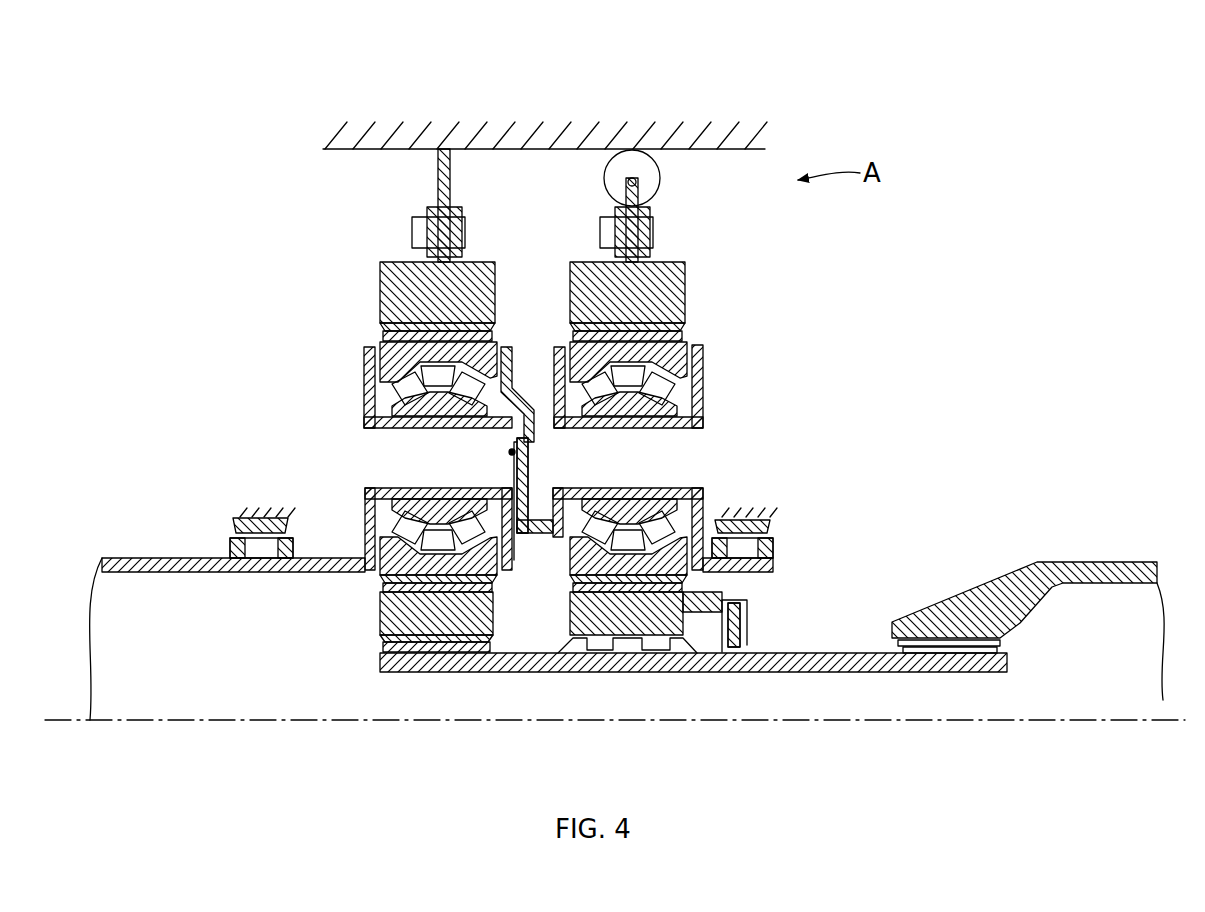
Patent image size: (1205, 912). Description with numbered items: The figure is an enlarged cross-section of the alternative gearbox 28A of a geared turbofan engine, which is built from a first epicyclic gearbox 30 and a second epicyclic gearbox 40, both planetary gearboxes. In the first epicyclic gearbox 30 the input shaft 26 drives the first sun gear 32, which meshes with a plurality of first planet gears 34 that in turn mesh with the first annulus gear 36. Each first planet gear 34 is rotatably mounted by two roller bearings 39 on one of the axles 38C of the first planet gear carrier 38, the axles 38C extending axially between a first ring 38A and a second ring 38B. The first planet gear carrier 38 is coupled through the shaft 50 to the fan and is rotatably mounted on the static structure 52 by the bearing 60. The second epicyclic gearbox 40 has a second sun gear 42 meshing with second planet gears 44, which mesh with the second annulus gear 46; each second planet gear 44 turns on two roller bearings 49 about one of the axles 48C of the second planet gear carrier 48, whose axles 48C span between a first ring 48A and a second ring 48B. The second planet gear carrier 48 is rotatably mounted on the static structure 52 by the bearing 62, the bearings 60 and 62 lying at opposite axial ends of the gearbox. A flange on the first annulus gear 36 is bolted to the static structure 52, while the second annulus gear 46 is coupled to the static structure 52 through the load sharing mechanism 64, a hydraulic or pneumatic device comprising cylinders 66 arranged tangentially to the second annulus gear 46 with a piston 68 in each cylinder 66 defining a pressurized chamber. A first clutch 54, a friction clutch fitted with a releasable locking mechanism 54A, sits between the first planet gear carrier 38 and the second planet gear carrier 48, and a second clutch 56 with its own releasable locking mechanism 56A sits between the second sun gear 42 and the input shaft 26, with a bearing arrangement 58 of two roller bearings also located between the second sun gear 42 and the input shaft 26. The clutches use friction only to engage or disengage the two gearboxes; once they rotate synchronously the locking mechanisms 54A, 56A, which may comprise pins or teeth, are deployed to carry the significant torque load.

The input shaft 26 is at (1115, 570).
The alternative gearbox 28A is at (880, 207).
The first epicyclic gearbox 30 is at (411, 245).
The first sun gear 32 is at (380, 625).
The first planet gear 34 is at (372, 363).
The first annulus gear 36 is at (465, 295).
The first planet gear carrier 38 is at (393, 372).
The first ring 38A is at (385, 380).
The second ring 38B is at (507, 345).
The axles 38C is at (398, 428).
The planet gear bearing 39 is at (468, 372).
The second epicyclic gearbox 40 is at (665, 341).
The second sun gear 42 is at (672, 660).
The second planet gear 44 is at (697, 341).
The second annulus gear 46 is at (612, 287).
The second planet gear carrier 48 is at (671, 411).
The first ring 48A is at (573, 400).
The second ring 48B is at (697, 392).
The axles 48C is at (680, 430).
The planet gear bearing 49 is at (660, 405).
The shaft 50 is at (185, 557).
The static structure 52 is at (712, 110).
The first clutch 54 is at (512, 452).
The releasable locking mechanism 54A is at (522, 485).
The second clutch 56 is at (750, 587).
The releasable locking mechanism 56A is at (734, 625).
The bearing arrangement 58 is at (652, 640).
The bearing 60 is at (300, 541).
The bearing 62 is at (772, 546).
The load sharing mechanism 64 is at (648, 173).
The cylinder 66 is at (628, 152).
The piston 68 is at (642, 190).